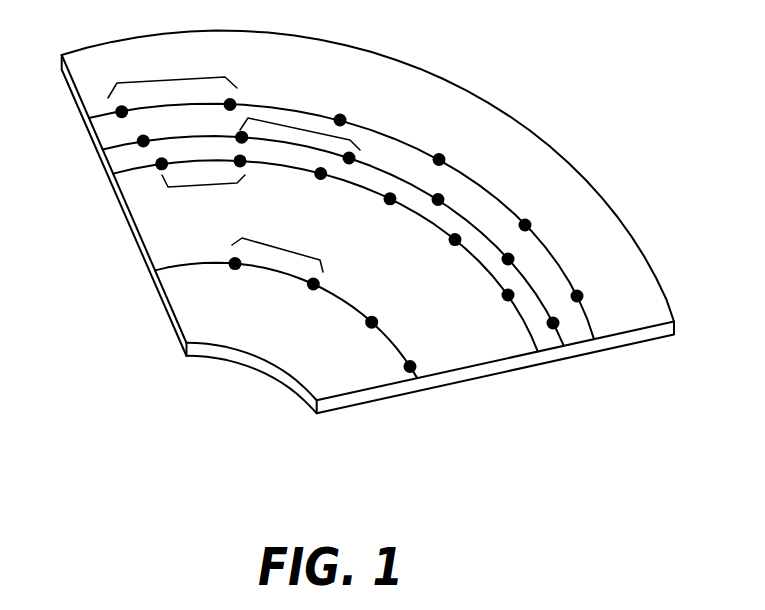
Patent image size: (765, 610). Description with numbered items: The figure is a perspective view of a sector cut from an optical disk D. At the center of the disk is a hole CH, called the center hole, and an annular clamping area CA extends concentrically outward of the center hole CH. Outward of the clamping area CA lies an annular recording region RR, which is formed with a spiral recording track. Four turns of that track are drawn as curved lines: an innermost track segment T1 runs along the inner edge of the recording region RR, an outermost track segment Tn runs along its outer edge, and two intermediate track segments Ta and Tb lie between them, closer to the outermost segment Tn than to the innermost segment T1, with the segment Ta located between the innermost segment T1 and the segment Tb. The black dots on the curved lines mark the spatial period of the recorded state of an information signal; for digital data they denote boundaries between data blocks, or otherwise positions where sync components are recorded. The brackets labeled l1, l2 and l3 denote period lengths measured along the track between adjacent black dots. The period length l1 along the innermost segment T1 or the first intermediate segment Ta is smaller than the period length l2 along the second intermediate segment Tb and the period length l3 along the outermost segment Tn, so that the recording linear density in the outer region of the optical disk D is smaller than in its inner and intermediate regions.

The optical disk D is at (156, 329).
The center hole CH is at (212, 351).
The clamping area CA is at (374, 399).
The recording region RR is at (142, 283).
The outermost track segment Tn is at (593, 320).
The intermediate track segment Tb is at (563, 340).
The intermediate track segment Ta is at (490, 270).
The innermost track segment T1 is at (393, 343).
The period length l1 is at (242, 223).
The period length l2 is at (302, 131).
The period length l3 is at (172, 73).